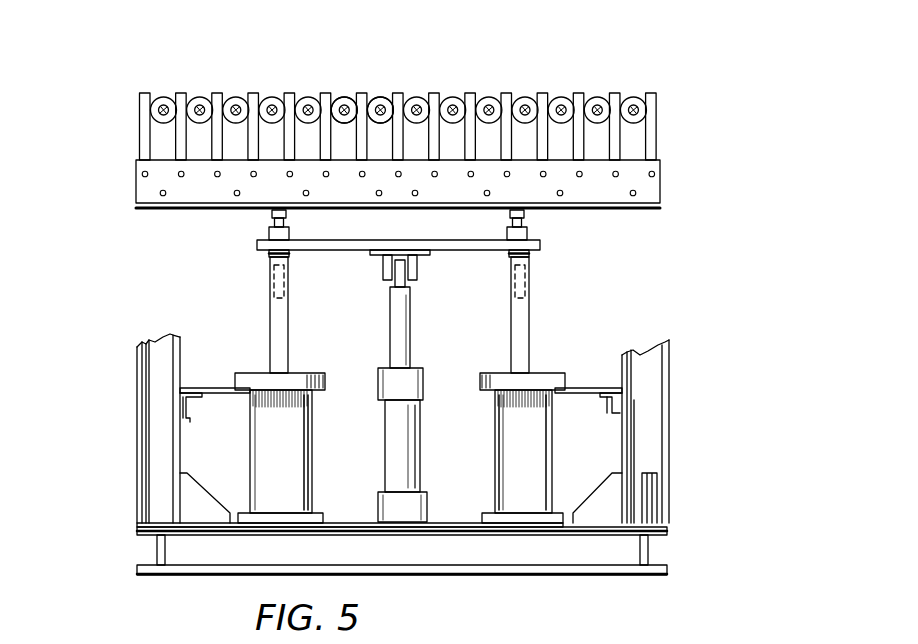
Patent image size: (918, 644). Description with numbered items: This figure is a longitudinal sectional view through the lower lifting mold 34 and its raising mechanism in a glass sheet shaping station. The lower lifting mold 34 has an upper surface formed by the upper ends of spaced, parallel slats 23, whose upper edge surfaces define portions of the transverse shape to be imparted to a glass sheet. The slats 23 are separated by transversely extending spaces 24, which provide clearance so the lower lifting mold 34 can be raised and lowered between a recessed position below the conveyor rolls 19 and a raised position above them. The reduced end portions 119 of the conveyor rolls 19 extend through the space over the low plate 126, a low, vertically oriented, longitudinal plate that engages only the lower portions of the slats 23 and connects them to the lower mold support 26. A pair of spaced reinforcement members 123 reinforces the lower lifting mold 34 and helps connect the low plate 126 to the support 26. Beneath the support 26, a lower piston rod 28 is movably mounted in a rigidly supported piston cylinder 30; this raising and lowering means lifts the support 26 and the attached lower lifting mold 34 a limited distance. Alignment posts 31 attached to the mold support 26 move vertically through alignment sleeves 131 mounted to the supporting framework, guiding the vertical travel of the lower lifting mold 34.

The conveyor rolls 19 is at (166, 100).
The slats 23 is at (540, 93).
The spaces 24 is at (277, 137).
The lower mold support 26 is at (470, 251).
The lower piston rods 28 is at (391, 332).
The piston cylinder 30 is at (421, 430).
The alignment posts 31 is at (272, 273).
The lower lifting mold 34 is at (120, 163).
The reduced end portions 119 is at (377, 99).
The reinforcement members 123 is at (268, 216).
The low plate 126 is at (662, 175).
The alignment sleeves 131 is at (269, 308).